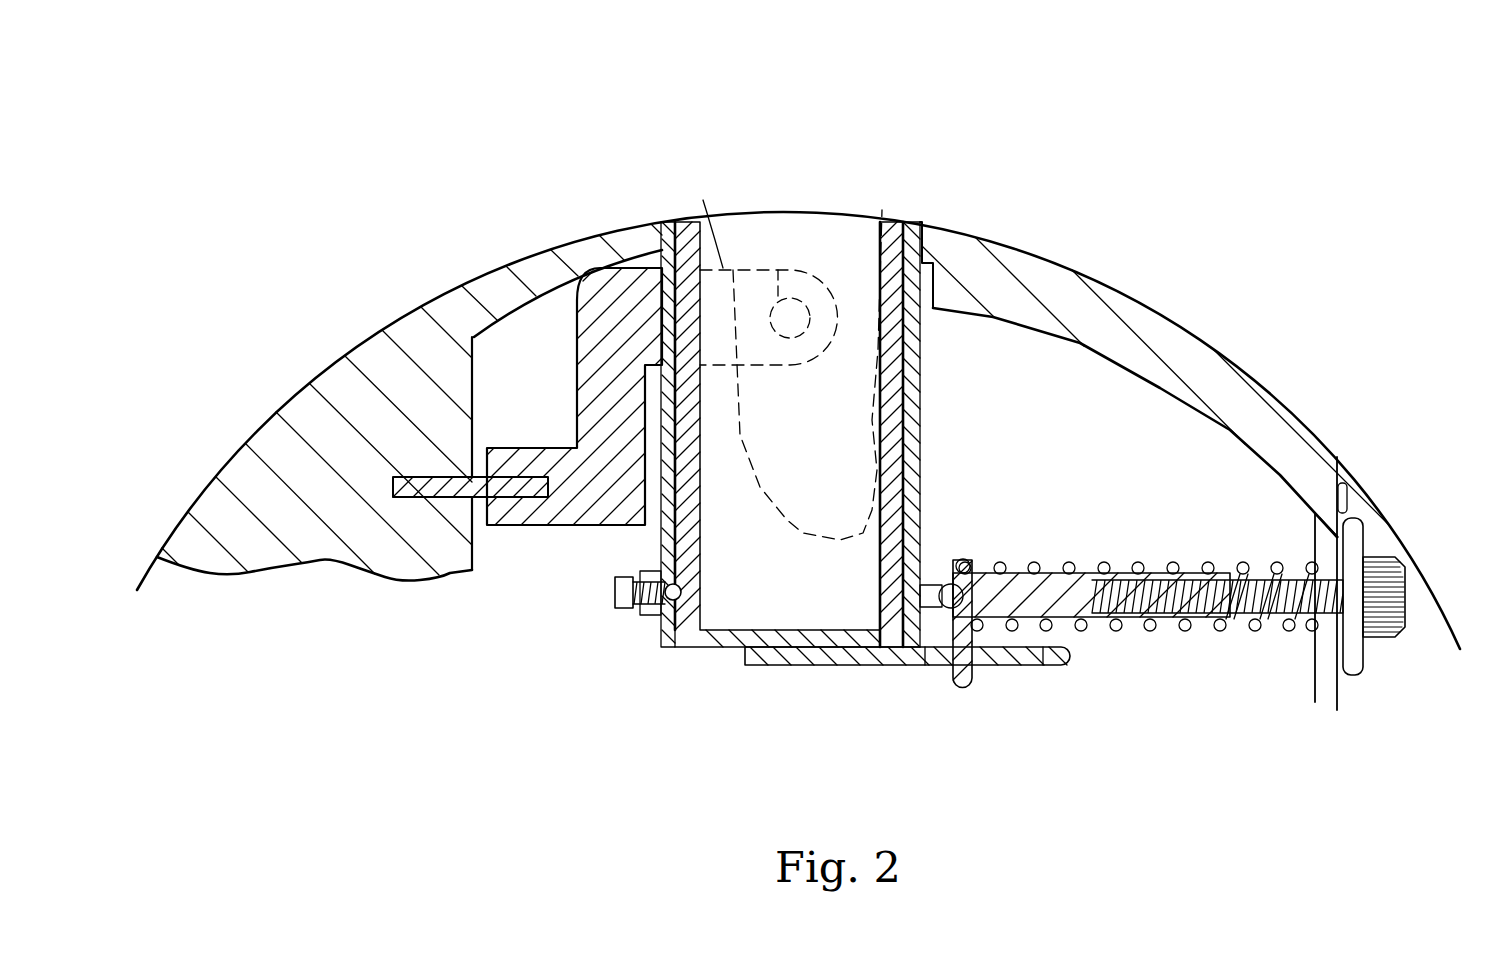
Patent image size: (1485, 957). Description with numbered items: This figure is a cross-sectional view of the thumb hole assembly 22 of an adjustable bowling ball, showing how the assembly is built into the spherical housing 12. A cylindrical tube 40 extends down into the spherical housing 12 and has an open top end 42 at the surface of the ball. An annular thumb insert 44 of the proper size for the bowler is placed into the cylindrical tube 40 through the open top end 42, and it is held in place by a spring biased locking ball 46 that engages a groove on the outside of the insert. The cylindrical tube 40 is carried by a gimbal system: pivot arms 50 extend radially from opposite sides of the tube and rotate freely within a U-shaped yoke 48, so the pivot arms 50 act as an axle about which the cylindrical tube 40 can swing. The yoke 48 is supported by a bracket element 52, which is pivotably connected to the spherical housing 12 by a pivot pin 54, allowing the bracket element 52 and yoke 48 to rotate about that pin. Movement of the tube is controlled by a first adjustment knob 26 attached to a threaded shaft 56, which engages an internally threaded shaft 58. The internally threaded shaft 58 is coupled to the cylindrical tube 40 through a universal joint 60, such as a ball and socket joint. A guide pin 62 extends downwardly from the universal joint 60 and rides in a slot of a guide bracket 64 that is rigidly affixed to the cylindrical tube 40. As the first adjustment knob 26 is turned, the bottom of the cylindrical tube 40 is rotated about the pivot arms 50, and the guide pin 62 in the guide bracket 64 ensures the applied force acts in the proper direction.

The spherical housing 12 is at (1118, 291).
The thumb hole assembly 22 is at (940, 176).
The first adjustment knob 26 is at (1377, 620).
The cylindrical tube 40 is at (915, 338).
The open top end 42 is at (712, 217).
The annular thumb insert 44 is at (910, 448).
The spring biased locking ball 46 is at (683, 589).
The yoke 48 is at (740, 270).
The pivot arms 50 is at (778, 270).
The bracket element 52 is at (598, 510).
The pivot pin 54 is at (455, 498).
The threaded shaft 56 is at (1283, 614).
The internally threaded shaft 58 is at (1050, 582).
The universal joint 60 is at (962, 562).
The guide pin 62 is at (963, 688).
The guide bracket 64 is at (1070, 662).